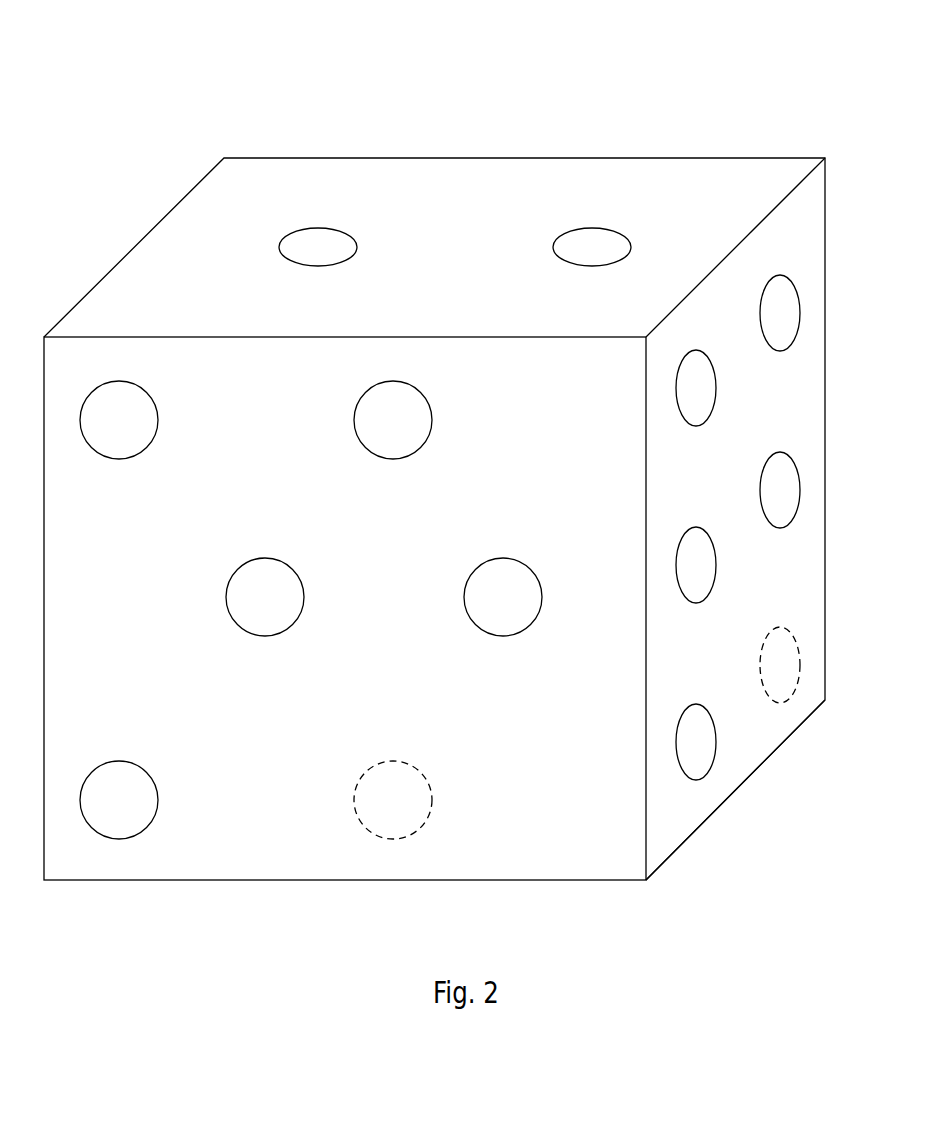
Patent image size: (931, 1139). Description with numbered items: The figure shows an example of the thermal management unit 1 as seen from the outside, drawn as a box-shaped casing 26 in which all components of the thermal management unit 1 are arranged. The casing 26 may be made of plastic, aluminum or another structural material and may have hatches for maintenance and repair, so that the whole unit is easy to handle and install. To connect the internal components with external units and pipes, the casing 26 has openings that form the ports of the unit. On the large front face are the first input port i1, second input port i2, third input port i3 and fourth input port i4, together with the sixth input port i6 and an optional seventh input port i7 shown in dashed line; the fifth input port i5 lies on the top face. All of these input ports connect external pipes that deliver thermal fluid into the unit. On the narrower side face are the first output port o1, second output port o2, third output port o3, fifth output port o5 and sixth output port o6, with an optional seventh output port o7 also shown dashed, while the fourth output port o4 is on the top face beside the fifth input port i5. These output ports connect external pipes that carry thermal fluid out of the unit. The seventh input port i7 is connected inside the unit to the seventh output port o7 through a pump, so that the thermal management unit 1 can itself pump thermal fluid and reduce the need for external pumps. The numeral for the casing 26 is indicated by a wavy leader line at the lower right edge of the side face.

The thermal management unit 1 is at (208, 104).
The first input port i1 is at (119, 420).
The second input port i2 is at (393, 420).
The third input port i3 is at (265, 597).
The fourth input port i4 is at (119, 800).
The fifth input port i5 is at (318, 247).
The sixth input port i6 is at (503, 597).
The seventh input port i7 is at (393, 800).
The first output port o1 is at (696, 388).
The second output port o2 is at (780, 313).
The third output port o3 is at (696, 565).
The fourth output port o4 is at (592, 247).
The fifth output port o5 is at (696, 742).
The sixth output port o6 is at (780, 490).
The seventh output port o7 is at (780, 665).
The casing 26 is at (678, 808).